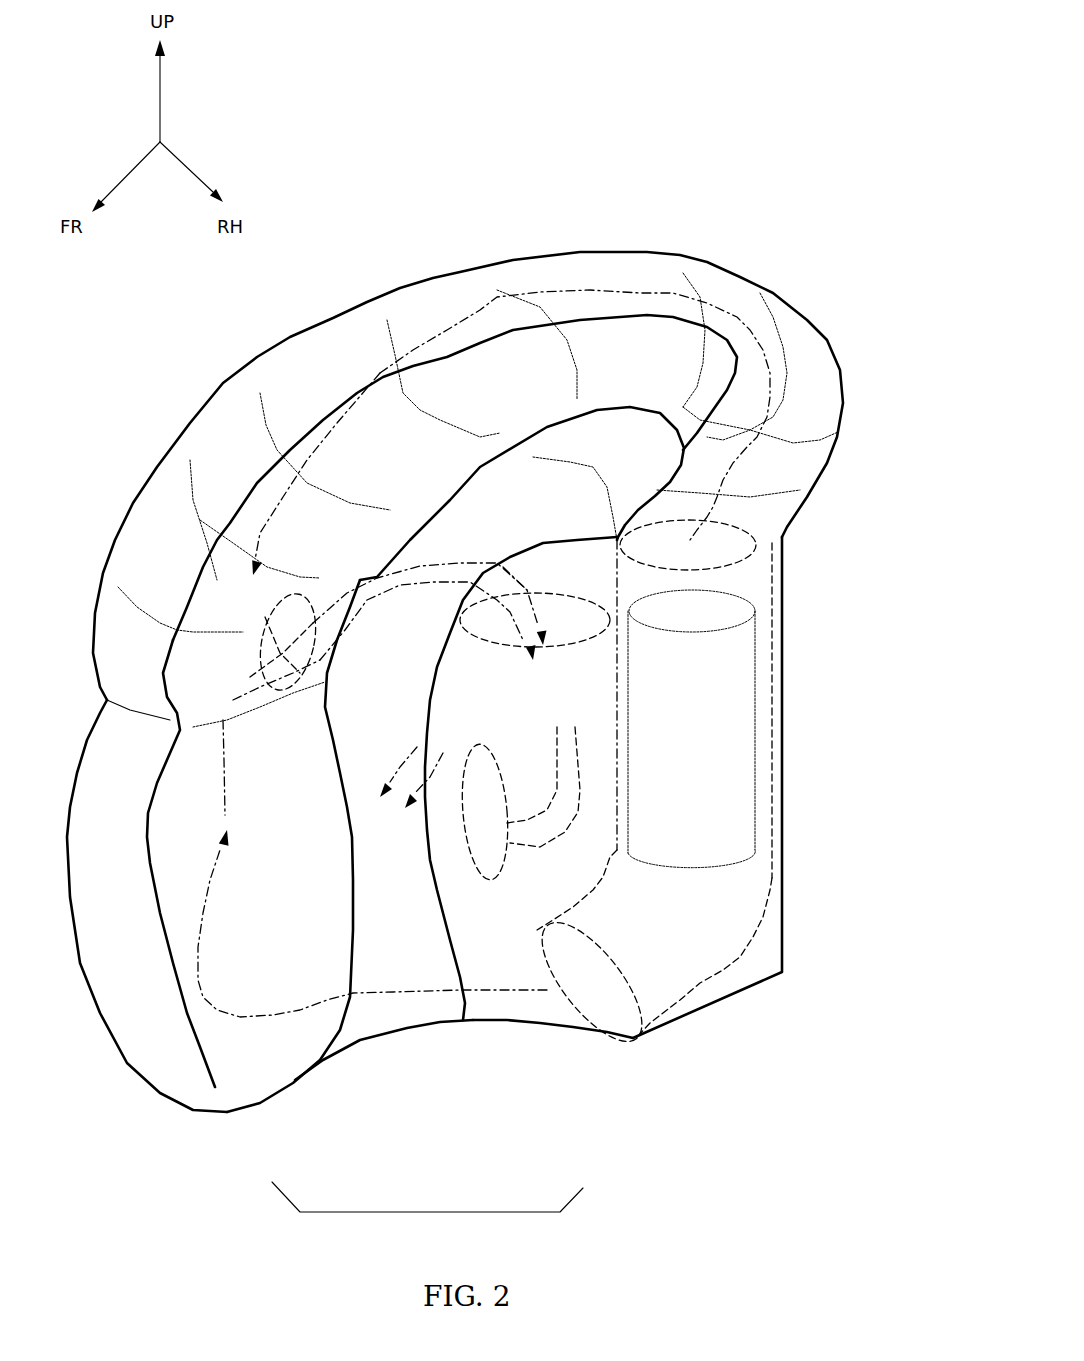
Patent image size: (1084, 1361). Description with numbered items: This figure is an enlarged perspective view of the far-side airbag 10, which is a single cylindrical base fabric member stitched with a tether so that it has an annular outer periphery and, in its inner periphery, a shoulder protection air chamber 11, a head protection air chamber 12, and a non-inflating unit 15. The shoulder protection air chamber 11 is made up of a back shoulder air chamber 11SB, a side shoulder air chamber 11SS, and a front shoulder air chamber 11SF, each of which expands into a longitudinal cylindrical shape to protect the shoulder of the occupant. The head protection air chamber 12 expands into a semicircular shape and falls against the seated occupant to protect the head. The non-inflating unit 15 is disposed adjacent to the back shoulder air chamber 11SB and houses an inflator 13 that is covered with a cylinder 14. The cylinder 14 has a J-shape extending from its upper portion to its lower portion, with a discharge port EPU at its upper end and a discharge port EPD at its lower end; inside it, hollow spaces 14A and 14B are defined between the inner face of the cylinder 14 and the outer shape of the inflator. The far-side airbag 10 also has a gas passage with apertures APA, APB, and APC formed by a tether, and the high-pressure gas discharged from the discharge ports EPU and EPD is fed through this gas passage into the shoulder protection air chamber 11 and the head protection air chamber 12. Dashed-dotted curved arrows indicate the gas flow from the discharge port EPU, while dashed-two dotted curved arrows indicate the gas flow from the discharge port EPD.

The far-side airbag 10 is at (478, 382).
The shoulder protection air chamber 11 is at (427, 1216).
The front shoulder air chamber 11SF is at (208, 902).
The side shoulder air chamber 11SS is at (350, 872).
The back shoulder air chamber 11SB is at (529, 851).
The head protection air chamber 12 is at (478, 368).
The inflator 13 is at (763, 729).
The cylinder 14 is at (641, 628).
The hollow space 14A is at (846, 710).
The hollow space 14B is at (735, 921).
The non-inflating unit 15 is at (778, 812).
The aperture APA is at (301, 695).
The aperture APB is at (484, 415).
The aperture APC is at (659, 786).
The discharge port EPU is at (767, 511).
The discharge port EPD is at (605, 1036).